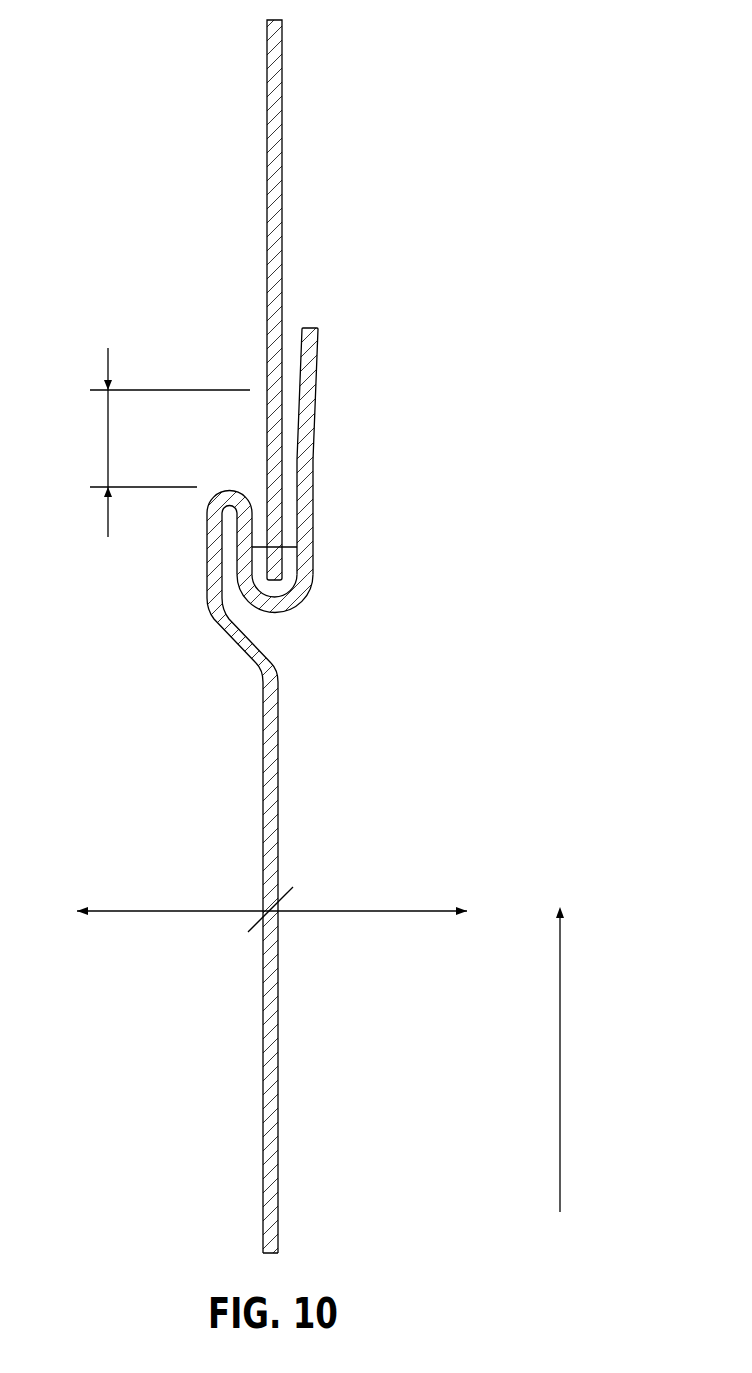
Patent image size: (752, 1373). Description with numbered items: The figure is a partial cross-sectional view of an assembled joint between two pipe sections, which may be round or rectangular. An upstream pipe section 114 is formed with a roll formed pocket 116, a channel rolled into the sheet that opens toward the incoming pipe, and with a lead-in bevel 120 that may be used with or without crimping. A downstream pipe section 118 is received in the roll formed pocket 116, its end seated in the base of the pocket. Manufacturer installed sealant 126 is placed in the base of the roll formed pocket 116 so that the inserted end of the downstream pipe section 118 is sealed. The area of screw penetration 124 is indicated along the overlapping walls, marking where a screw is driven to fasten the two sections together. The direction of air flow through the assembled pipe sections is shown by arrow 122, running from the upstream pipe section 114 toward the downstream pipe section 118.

The upstream pipe section 114 is at (247, 986).
The roll formed pocket 116 is at (184, 565).
The downstream pipe section 118 is at (250, 190).
The lead-in bevel 120 is at (326, 362).
The arrow 122 is at (560, 1073).
The area of screw penetration 124 is at (108, 430).
The manufacturer installed sealant 126 is at (326, 602).